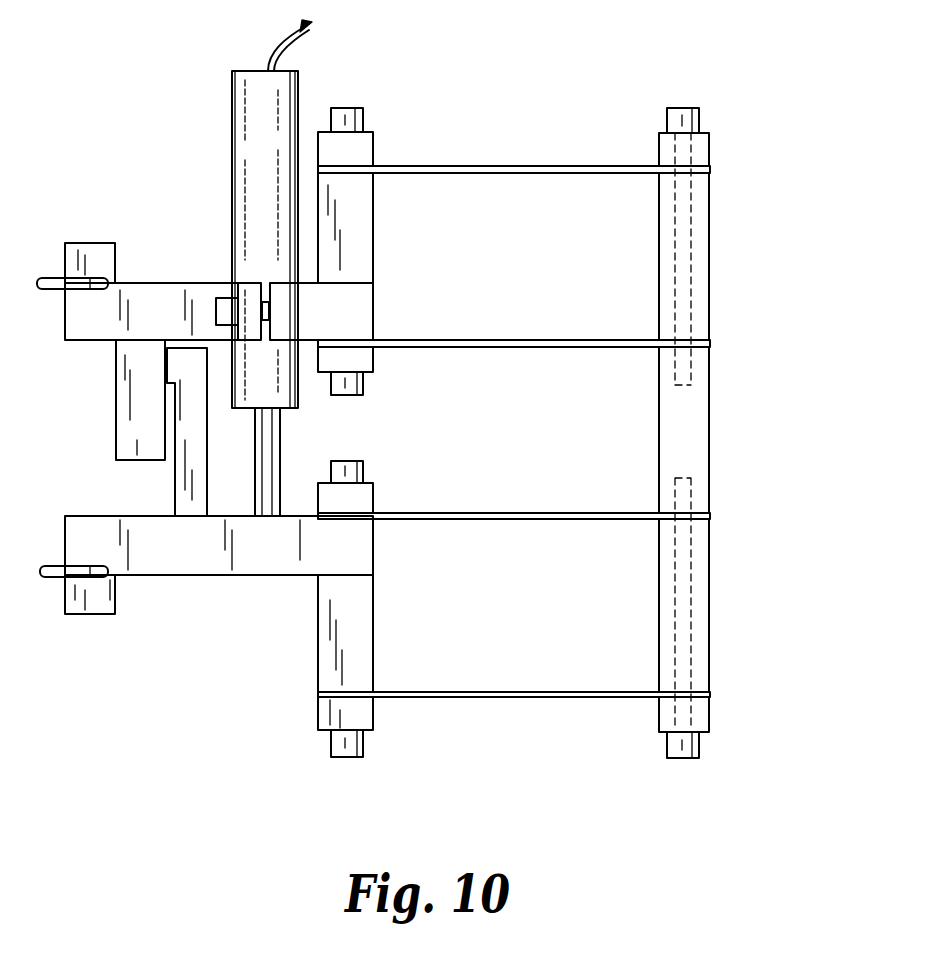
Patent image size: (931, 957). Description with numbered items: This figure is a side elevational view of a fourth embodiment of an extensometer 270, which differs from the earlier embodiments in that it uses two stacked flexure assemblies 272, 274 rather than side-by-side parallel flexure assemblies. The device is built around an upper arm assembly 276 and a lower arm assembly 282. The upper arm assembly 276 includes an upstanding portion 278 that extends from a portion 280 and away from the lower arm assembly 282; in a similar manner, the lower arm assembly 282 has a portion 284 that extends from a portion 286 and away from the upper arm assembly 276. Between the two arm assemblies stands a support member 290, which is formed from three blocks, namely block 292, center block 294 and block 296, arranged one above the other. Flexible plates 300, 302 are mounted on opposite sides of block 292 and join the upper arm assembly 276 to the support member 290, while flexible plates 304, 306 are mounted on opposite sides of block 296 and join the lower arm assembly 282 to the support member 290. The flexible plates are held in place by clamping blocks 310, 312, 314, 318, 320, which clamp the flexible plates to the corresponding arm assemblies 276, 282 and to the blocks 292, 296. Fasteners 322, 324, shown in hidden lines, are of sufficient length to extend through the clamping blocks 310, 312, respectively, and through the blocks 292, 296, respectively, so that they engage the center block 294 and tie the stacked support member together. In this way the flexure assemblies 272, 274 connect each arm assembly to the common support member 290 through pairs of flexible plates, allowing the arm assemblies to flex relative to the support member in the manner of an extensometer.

The extensometer 270 is at (170, 106).
The flexure assembly 272 is at (597, 130).
The flexure assembly 274 is at (604, 740).
The upper arm assembly 276 is at (205, 268).
The upstanding portion 278 is at (375, 248).
The portion 280 is at (148, 283).
The lower arm assembly 282 is at (205, 620).
The portion 284 is at (375, 621).
The portion 286 is at (265, 577).
The support member 290 is at (746, 378).
The block 292 is at (710, 228).
The center block 294 is at (710, 450).
The block 296 is at (710, 600).
The flexible plate 300 is at (462, 166).
The flexible plate 302 is at (478, 343).
The flexible plate 304 is at (505, 517).
The flexible plate 306 is at (520, 692).
The clamping block 310 is at (375, 486).
The clamping block 312 is at (710, 716).
The clamping block 314 is at (375, 718).
The clamping block 318 is at (373, 355).
The clamping block 320 is at (375, 146).
The fastener 322 is at (693, 278).
The fastener 324 is at (693, 626).